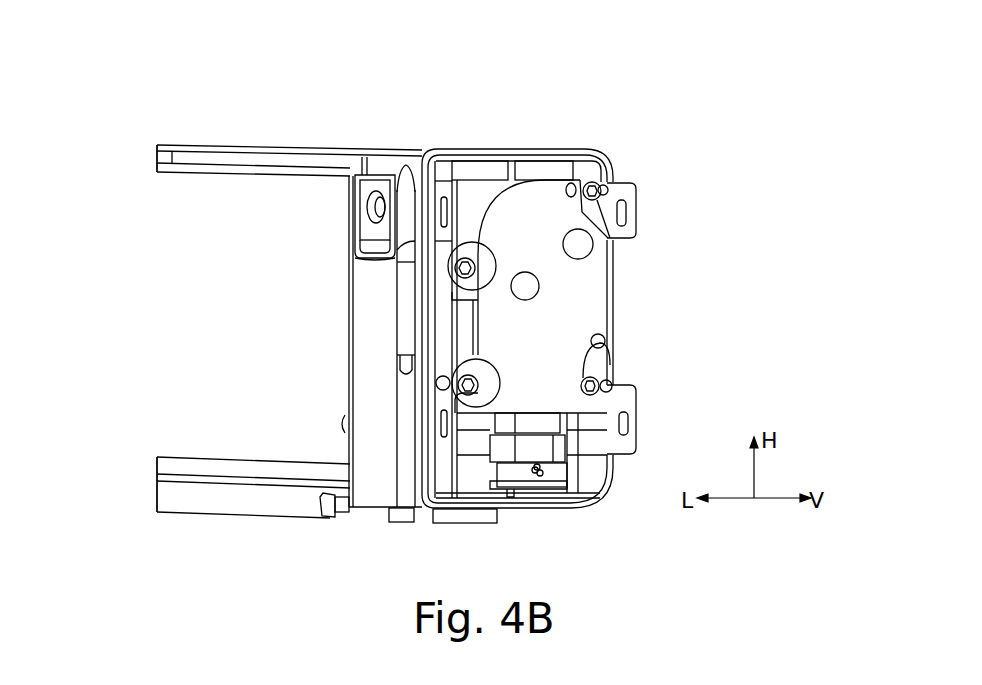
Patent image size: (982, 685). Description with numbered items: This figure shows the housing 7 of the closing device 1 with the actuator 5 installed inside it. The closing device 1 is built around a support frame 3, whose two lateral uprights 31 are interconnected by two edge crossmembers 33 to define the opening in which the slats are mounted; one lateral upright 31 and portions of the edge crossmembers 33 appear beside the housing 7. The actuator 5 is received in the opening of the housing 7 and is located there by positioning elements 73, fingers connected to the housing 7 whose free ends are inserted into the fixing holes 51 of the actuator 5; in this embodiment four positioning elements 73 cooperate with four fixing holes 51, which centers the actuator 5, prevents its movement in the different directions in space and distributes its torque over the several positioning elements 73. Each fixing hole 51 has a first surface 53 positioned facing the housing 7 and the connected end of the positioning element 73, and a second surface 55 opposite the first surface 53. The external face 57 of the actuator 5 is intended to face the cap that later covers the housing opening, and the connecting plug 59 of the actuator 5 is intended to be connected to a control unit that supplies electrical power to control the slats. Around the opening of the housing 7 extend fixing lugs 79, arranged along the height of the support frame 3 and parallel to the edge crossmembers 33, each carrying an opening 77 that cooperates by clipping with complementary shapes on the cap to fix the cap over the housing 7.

The closing device 1 is at (709, 79).
The support frame 3 is at (240, 138).
The actuator 5 is at (528, 160).
The housing 7 is at (503, 138).
The lateral upright 31 is at (349, 340).
The edge crossmember 33 is at (166, 145).
The fixing hole 51 is at (455, 268).
The first surface 53 is at (396, 262).
The second surface 55 is at (392, 252).
The external face 57 is at (585, 287).
The connecting plug 59 is at (572, 495).
The positioning element 73 is at (456, 283).
The opening 77 is at (356, 216).
The fixing lug 79 is at (437, 190).